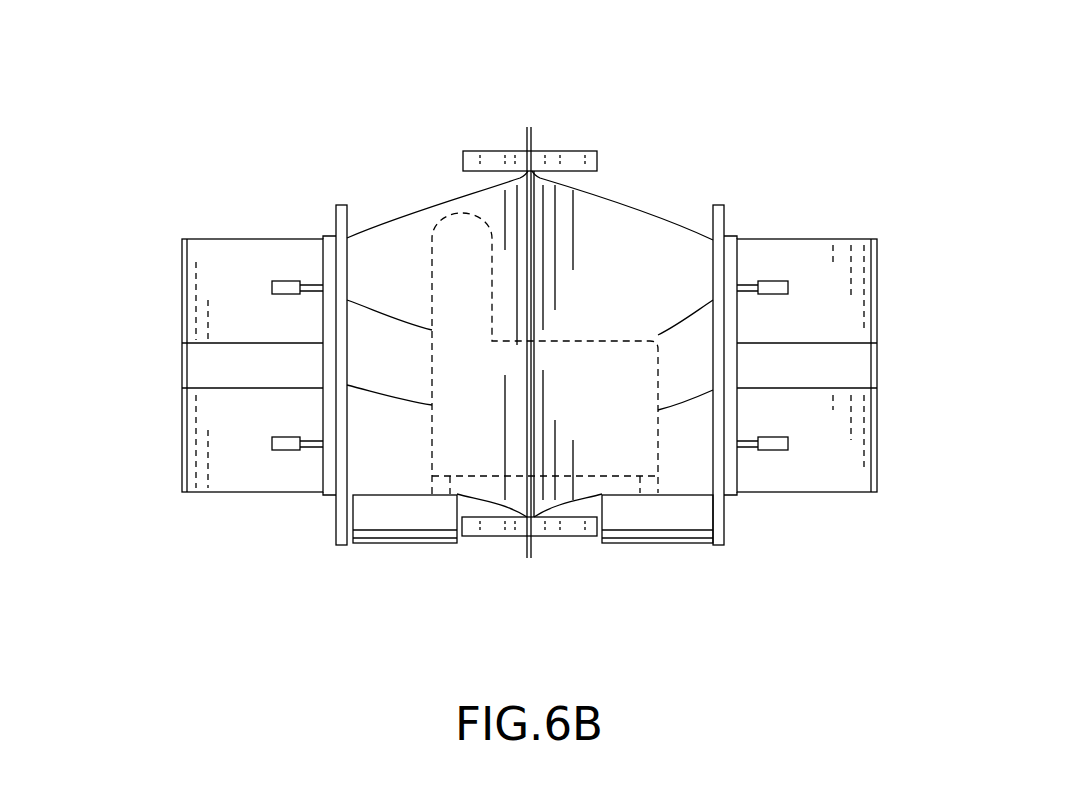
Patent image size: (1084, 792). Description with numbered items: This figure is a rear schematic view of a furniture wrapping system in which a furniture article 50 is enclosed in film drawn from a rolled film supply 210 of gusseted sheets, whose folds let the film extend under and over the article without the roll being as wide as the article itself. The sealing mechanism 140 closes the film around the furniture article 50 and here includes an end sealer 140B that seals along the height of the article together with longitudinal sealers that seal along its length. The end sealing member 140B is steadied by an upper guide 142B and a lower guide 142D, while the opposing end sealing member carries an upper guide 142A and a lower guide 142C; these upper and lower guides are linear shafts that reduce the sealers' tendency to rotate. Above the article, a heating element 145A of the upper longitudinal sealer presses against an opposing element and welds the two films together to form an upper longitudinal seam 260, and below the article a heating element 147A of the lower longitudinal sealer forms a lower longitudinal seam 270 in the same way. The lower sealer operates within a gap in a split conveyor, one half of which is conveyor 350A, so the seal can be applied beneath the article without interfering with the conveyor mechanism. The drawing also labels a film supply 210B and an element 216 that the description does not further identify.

The second duct section 210B is at (168, 353).
The rolled film supply 210 is at (830, 475).
The end sealer 140B is at (333, 216).
The sealing mechanism 140 is at (725, 472).
The upper guide 142A is at (773, 280).
The upper guide 142B is at (283, 279).
The lower guide 142C is at (778, 437).
The lower guide 142D is at (287, 451).
The longitudinal seam 260 is at (527, 140).
The longitudinal seam 270 is at (532, 558).
The shaft 216 is at (531, 440).
The furniture article 50 is at (568, 338).
The conveyor 350A is at (396, 558).
The heating element 147A is at (504, 548).
The heating element 145A is at (512, 116).